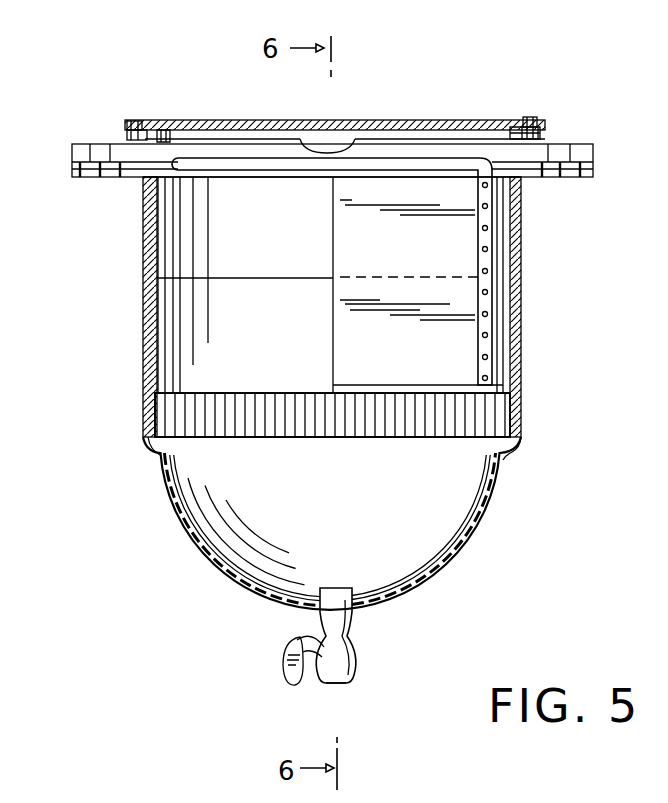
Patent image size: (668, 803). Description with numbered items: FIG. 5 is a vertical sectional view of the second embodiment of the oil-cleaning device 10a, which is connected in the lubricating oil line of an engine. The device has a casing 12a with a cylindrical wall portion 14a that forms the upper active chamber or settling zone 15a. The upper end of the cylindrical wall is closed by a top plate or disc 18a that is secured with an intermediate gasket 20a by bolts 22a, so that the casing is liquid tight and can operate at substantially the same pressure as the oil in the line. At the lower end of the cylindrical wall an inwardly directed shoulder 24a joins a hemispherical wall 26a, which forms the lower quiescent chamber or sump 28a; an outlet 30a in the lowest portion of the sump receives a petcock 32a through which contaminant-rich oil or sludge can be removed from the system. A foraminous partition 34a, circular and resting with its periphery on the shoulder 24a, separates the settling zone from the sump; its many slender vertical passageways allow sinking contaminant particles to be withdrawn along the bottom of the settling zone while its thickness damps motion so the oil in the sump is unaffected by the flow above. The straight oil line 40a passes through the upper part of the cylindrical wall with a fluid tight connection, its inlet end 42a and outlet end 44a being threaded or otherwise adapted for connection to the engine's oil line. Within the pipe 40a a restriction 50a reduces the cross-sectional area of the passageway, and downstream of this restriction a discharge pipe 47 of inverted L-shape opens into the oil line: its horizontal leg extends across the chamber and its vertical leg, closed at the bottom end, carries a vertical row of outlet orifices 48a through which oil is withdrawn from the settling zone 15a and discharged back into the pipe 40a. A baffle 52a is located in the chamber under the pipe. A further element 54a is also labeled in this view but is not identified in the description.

The device 10a is at (203, 556).
The casing 12a is at (523, 333).
The cylindrical wall portion 14a is at (520, 297).
The upper active chamber or settling zone 15a is at (280, 261).
The top plate 18a is at (428, 120).
The gasket 20a is at (540, 136).
The bolts 22a is at (527, 118).
The shoulder 24a is at (512, 450).
The hemispherical wall 26a is at (482, 525).
The sump 28a is at (262, 556).
The outlet 30a is at (353, 610).
The petcock 32a is at (334, 685).
The foraminous partition 34a is at (283, 438).
The oil line 40a is at (223, 178).
The inlet end 42a is at (584, 143).
The outlet end 44a is at (82, 145).
The discharge pipe 47 is at (410, 164).
The outlet orifices 48a is at (480, 292).
The restriction 50a is at (327, 150).
The baffle 52a is at (333, 337).
The liner wall 54a is at (165, 313).